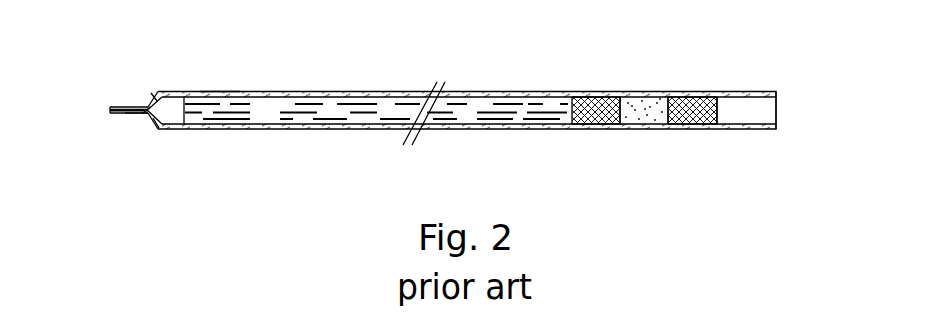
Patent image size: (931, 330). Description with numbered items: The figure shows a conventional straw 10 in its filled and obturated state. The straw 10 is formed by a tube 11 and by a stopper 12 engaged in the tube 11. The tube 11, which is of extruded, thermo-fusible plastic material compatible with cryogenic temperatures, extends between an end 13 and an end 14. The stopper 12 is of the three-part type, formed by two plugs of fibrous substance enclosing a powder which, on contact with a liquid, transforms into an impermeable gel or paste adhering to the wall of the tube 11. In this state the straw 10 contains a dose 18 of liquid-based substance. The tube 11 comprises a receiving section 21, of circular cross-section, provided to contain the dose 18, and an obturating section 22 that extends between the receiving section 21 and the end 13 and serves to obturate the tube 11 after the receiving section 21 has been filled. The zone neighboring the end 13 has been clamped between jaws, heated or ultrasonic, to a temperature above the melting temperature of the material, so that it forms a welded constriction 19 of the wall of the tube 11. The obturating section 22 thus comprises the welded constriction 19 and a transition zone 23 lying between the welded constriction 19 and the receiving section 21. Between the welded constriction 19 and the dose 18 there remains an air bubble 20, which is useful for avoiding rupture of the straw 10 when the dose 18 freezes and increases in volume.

The straw 10 is at (442, 114).
The tube 11 is at (318, 91).
The stopper 12 is at (640, 150).
The end 13 is at (110, 107).
The end 14 is at (777, 110).
The dose of liquid-based substance 18 is at (375, 113).
The welded constriction 19 is at (142, 105).
The air bubble 20 is at (170, 118).
The receiving section 21 is at (221, 68).
The obturating section 22 is at (127, 155).
The transition zone 23 is at (153, 100).